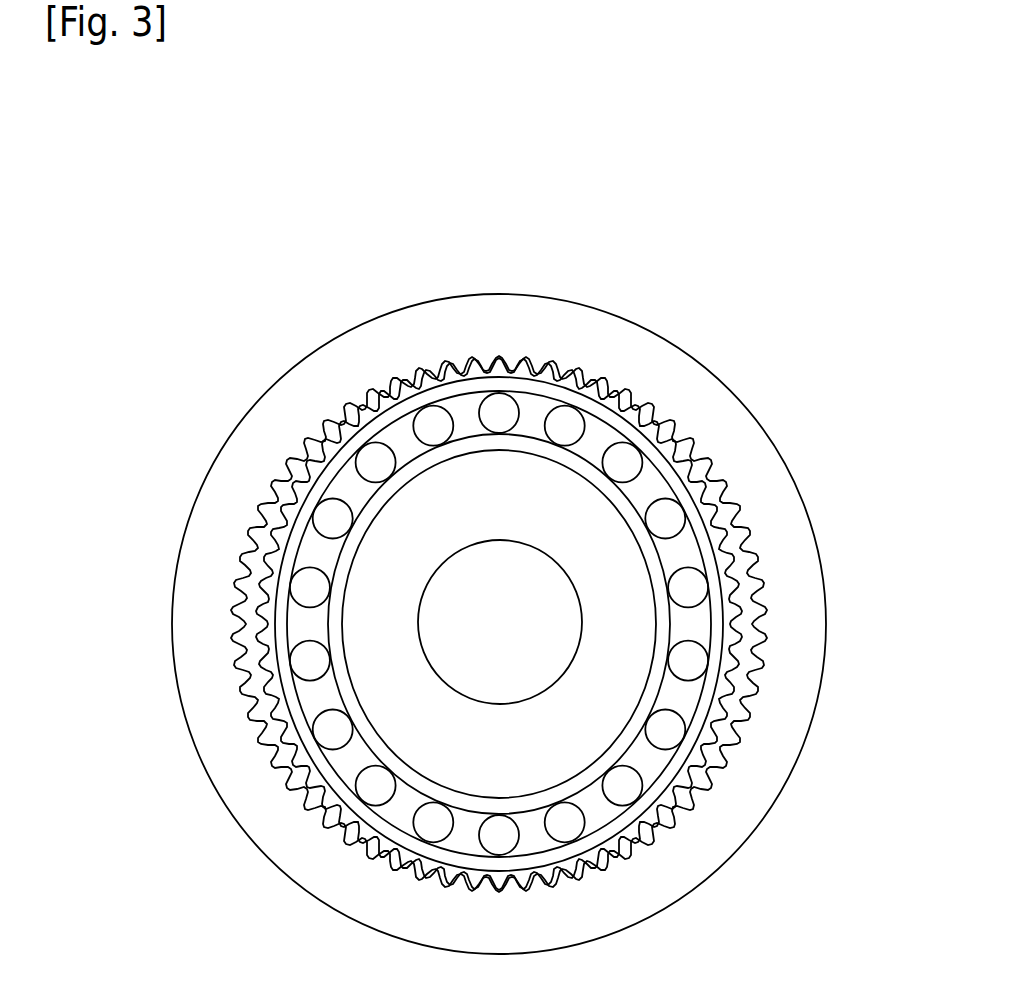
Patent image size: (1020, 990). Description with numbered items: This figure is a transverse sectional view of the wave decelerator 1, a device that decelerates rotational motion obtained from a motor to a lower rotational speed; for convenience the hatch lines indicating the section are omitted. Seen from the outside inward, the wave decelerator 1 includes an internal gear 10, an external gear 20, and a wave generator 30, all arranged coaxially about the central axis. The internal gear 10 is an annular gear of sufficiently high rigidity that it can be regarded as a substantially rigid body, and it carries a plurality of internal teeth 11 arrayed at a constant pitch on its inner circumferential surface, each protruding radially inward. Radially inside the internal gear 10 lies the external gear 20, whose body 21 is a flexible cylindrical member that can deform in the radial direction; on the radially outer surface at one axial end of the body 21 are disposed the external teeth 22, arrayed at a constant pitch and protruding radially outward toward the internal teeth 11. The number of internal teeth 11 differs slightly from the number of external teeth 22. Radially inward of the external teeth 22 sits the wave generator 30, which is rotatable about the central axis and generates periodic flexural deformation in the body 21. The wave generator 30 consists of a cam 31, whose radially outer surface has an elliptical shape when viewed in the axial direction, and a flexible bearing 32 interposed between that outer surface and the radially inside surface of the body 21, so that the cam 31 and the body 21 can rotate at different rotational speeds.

The wave decelerator 1 is at (503, 254).
The internal gear 10 is at (637, 355).
The internal teeth 11 is at (750, 545).
The external gear 20 is at (263, 686).
The body 21 is at (410, 375).
The external teeth 22 is at (273, 548).
The wave generator 30 is at (500, 597).
The cam 31 is at (398, 665).
The flexible bearing 32 is at (300, 588).